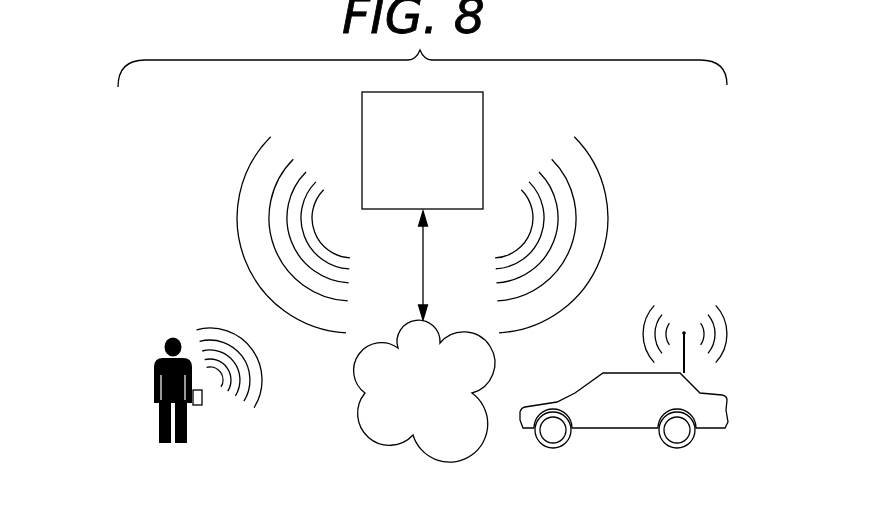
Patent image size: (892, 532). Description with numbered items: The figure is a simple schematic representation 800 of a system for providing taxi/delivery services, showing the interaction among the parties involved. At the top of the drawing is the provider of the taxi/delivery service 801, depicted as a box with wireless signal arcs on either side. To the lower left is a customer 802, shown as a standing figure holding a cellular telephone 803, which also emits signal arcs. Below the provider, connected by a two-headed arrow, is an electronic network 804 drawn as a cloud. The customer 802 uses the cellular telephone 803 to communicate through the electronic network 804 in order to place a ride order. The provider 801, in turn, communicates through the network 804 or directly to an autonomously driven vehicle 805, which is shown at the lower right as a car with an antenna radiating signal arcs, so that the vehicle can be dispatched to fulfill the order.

The schematic representation 800 is at (192, 157).
The provider of the taxi/delivery service 801 is at (483, 123).
The customer 802 is at (140, 326).
The cellular telephone 803 is at (198, 426).
The electronic network 804 is at (422, 455).
The autonomously driven vehicle 805 is at (695, 285).